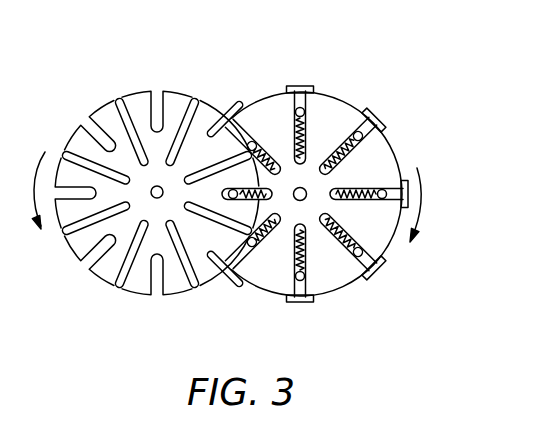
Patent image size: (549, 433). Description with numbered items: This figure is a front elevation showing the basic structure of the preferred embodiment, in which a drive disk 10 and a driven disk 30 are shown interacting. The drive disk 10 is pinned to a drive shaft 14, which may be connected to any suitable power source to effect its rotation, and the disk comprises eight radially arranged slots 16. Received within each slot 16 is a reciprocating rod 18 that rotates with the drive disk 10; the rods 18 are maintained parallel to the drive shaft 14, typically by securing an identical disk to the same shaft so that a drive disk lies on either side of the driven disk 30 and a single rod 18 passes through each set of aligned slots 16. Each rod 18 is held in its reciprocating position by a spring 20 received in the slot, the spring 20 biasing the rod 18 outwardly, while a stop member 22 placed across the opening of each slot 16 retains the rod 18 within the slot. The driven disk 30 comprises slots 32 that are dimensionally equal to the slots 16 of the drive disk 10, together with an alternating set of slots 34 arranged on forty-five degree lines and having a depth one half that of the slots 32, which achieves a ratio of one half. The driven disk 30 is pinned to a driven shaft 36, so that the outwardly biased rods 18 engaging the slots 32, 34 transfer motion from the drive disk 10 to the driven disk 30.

The drive disk 10 is at (339, 131).
The drive shaft 14 is at (304, 188).
The slot 16 is at (312, 88).
The reciprocating rod 18 is at (364, 111).
The spring 20 is at (328, 225).
The stop member 22 is at (369, 282).
The driven disk 30 is at (173, 100).
The slot 32 is at (122, 103).
The slot 34 is at (88, 123).
The driven shaft 36 is at (153, 198).